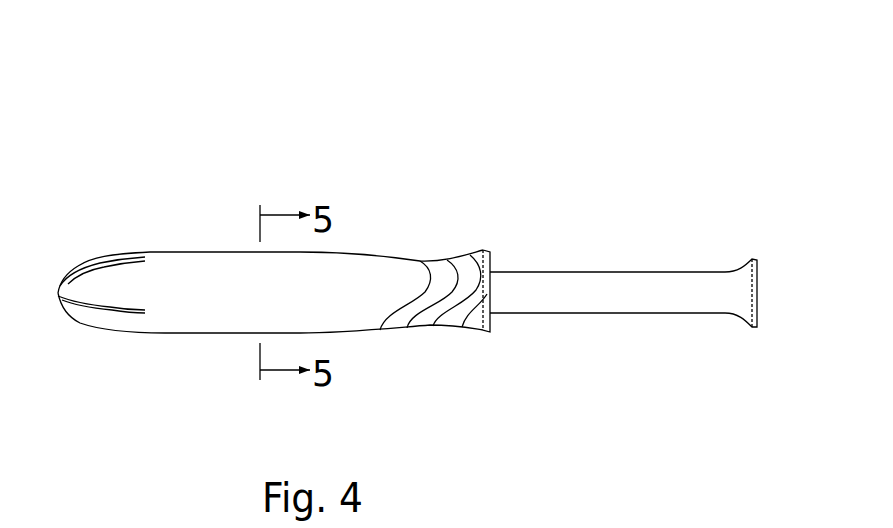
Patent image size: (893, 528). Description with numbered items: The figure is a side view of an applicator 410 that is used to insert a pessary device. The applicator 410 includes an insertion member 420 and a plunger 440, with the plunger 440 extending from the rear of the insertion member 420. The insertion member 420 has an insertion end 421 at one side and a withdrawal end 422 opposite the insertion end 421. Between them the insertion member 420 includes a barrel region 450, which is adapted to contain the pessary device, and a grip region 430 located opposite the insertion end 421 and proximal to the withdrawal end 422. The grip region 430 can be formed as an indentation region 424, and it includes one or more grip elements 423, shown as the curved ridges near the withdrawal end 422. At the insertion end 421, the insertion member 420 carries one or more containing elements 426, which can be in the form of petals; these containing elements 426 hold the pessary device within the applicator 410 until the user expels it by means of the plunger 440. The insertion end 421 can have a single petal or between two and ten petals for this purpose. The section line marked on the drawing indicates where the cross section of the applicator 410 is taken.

The applicator 410 is at (100, 86).
The insertion member 420 is at (226, 247).
The insertion end 421 is at (65, 273).
The withdrawal end 422 is at (479, 336).
The grip element 423 is at (409, 334).
The indentation region 424 is at (411, 256).
The containing element 426 is at (98, 292).
The grip region 430 is at (443, 256).
The plunger 440 is at (598, 268).
The barrel region 450 is at (218, 310).